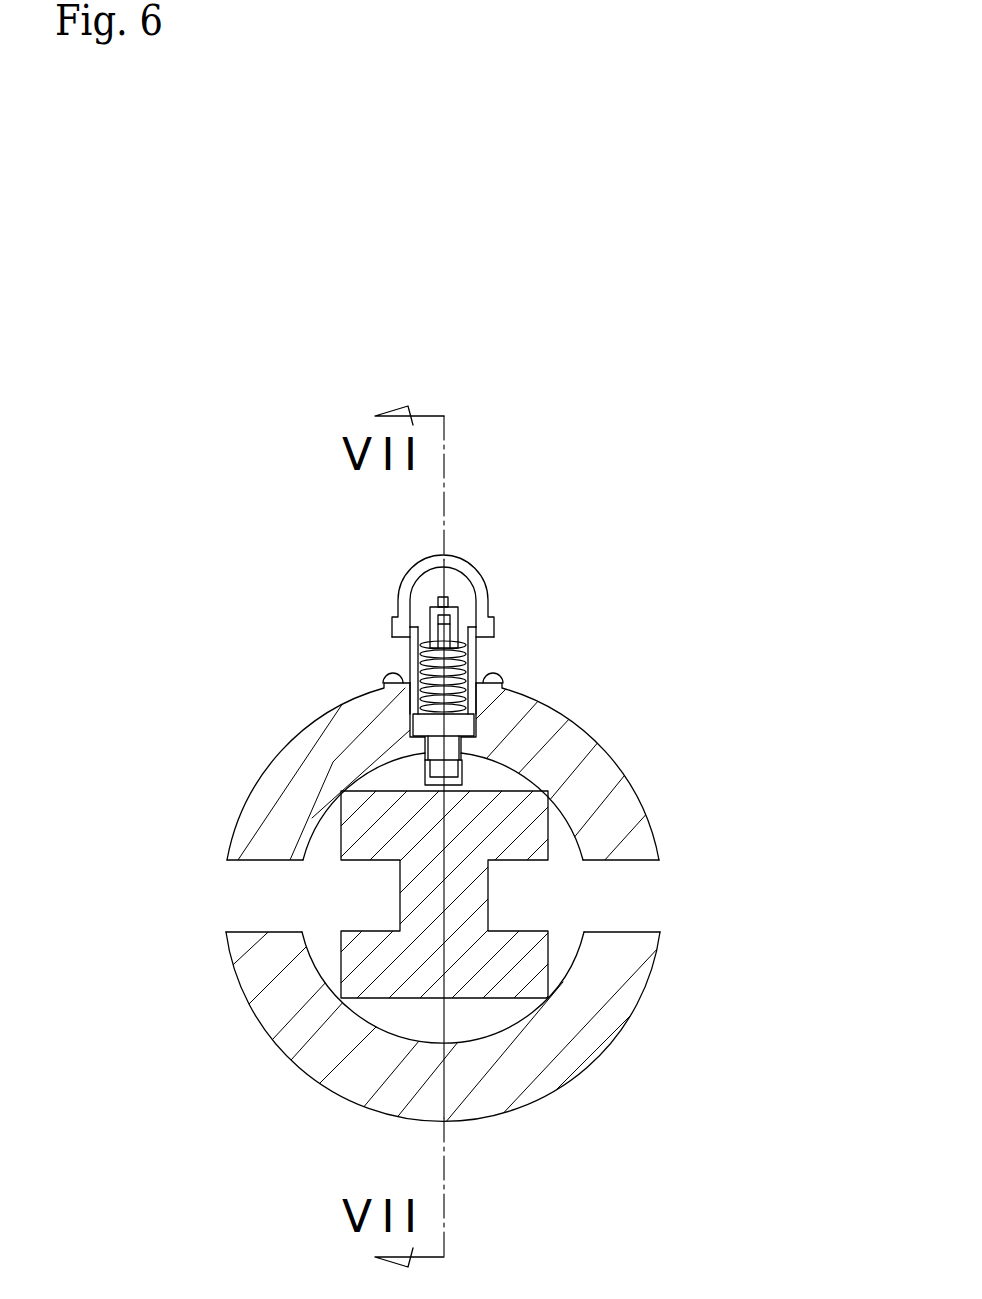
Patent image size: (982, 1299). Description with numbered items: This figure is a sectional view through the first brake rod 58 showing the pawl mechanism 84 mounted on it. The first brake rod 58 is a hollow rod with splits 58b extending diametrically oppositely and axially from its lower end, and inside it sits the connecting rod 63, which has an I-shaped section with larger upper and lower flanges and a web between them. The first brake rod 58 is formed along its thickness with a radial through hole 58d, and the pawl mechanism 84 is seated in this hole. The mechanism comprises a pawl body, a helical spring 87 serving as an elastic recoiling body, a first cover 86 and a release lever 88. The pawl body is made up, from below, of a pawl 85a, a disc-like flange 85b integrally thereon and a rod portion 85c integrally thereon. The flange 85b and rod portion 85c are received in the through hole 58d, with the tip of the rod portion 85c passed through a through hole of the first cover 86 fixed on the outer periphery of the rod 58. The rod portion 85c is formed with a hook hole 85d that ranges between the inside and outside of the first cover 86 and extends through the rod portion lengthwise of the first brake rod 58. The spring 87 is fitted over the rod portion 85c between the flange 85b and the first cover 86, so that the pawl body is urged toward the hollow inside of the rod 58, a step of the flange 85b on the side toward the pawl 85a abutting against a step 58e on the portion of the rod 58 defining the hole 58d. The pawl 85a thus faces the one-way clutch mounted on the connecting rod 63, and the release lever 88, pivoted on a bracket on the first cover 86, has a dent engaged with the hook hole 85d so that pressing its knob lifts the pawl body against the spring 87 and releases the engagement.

The first brake rod 58 is at (588, 1033).
The splits 58b is at (266, 907).
The radial through hole 58d is at (415, 688).
The step 58e is at (422, 743).
The connecting rod 63 is at (373, 832).
The pawl mechanism 84 is at (486, 548).
The pawl 85a is at (450, 776).
The disc-like flange 85b is at (450, 723).
The rod portion 85c is at (455, 637).
The hook hole 85d is at (440, 627).
The first cover 86 is at (478, 667).
The helical spring 87 is at (463, 698).
The release lever 88 is at (448, 621).